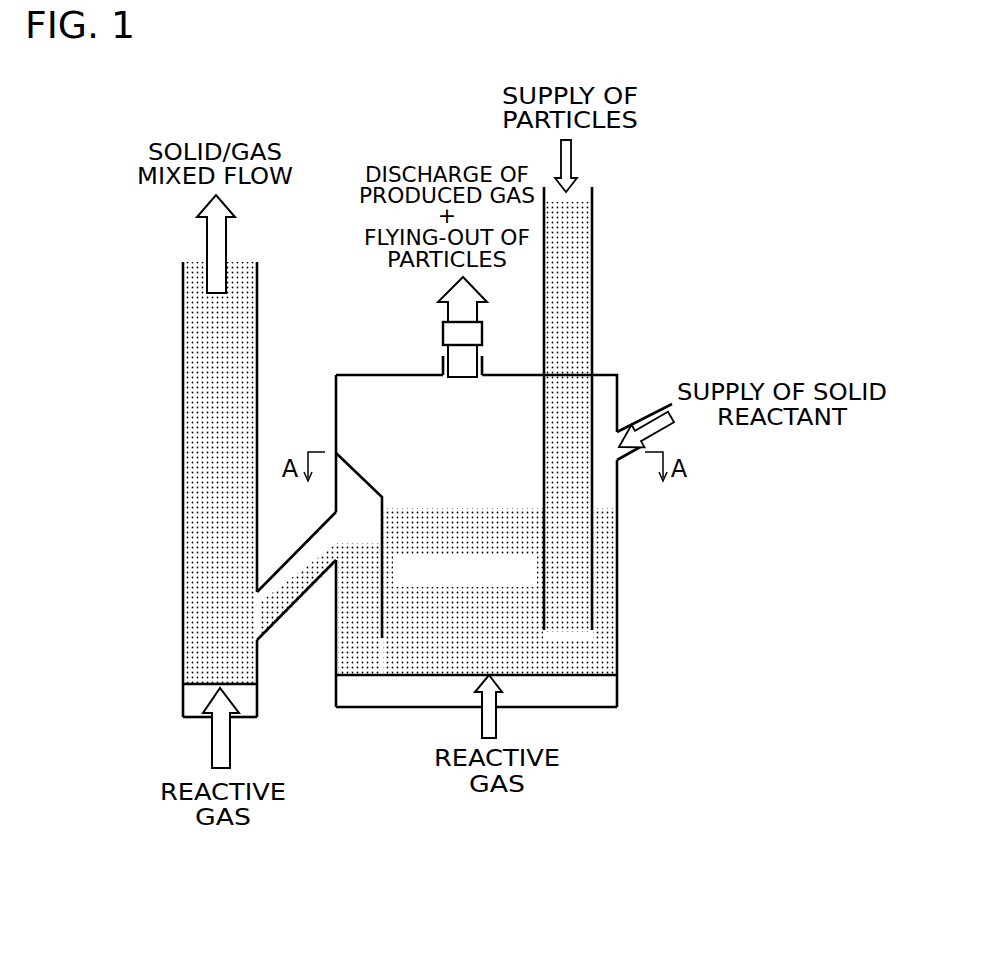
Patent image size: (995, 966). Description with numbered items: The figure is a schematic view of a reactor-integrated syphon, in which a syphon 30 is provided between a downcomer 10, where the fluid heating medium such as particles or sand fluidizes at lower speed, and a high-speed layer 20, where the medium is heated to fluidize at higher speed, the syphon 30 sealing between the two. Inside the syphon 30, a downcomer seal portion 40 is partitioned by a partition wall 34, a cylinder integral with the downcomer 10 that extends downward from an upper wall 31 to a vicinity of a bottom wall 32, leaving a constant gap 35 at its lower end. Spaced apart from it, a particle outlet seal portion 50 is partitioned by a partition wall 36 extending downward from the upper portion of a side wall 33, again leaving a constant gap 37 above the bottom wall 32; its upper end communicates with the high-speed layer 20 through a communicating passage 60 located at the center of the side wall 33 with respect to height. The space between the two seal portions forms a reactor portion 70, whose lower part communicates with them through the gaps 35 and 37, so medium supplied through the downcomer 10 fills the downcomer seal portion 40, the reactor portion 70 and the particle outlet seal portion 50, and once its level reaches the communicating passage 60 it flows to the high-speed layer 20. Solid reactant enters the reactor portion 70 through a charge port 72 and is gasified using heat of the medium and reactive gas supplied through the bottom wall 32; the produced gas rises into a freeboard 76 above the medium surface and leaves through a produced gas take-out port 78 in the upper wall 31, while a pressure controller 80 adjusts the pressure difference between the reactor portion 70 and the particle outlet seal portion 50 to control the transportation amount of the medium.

The downcomer 10 is at (568, 288).
The high-speed layer 20 is at (235, 348).
The syphon 30 is at (637, 683).
The upper wall 31 is at (512, 370).
The bottom wall 32 is at (580, 676).
The side wall 33 is at (336, 497).
The partition wall 34 is at (593, 490).
The gap 35 is at (580, 652).
The partition wall 36 is at (340, 462).
The gap 37 is at (360, 660).
The downcomer seal portion 40 is at (580, 553).
The particle outlet seal portion 50 is at (368, 603).
The communicating passage 60 is at (275, 605).
The reactor portion 70 is at (438, 582).
The charge port 72 is at (626, 430).
The freeboard 76 is at (438, 458).
The produced gas take-out port 78 is at (443, 365).
The pressure controller 80 is at (443, 330).